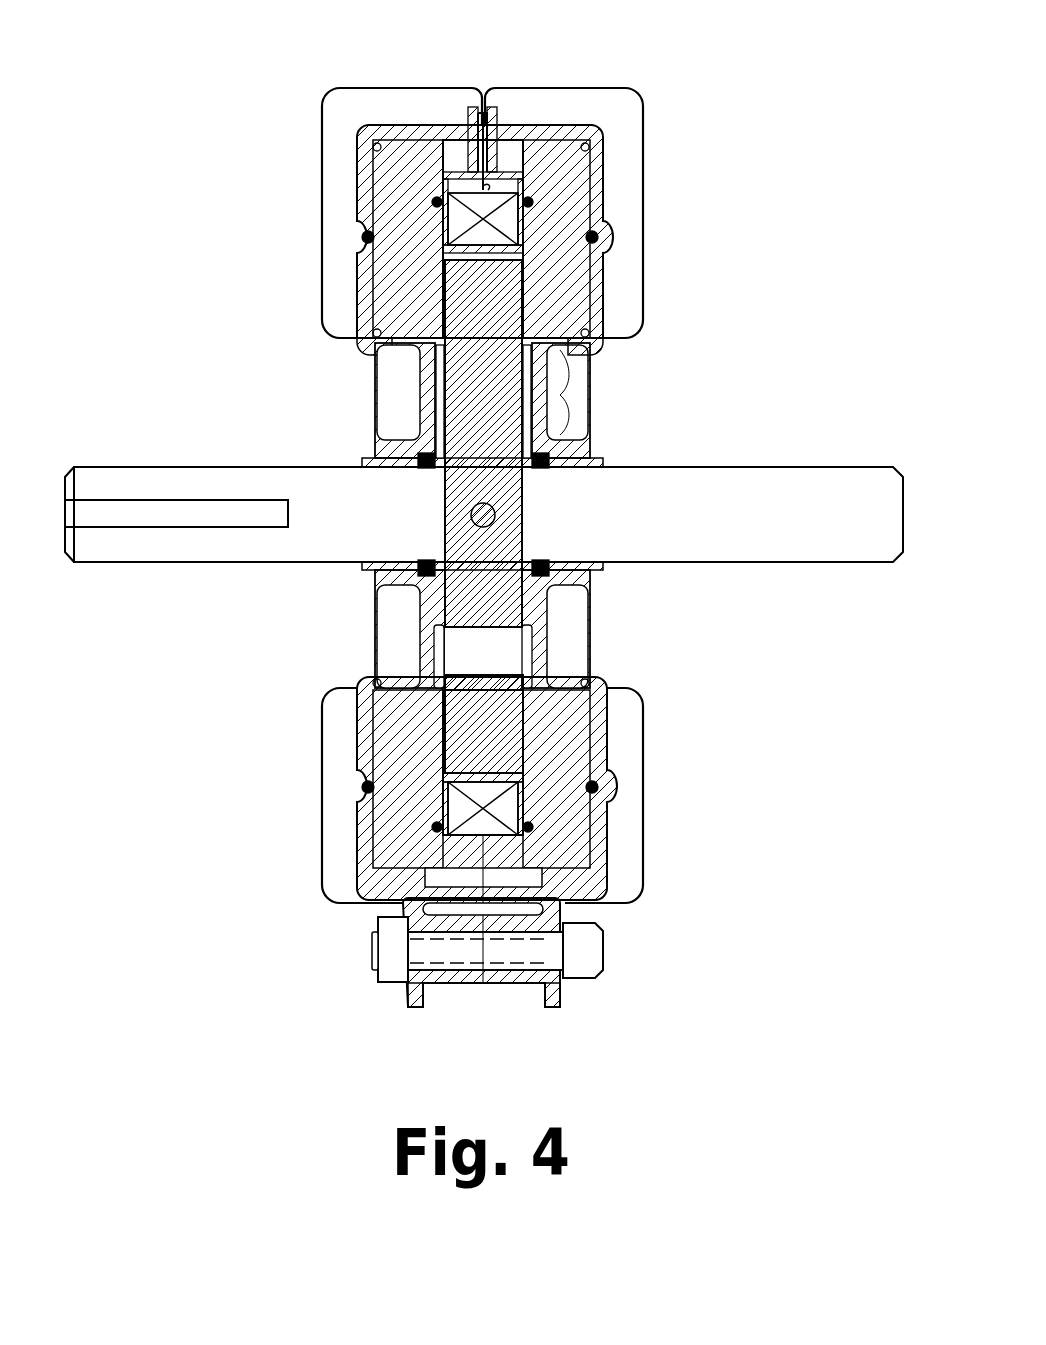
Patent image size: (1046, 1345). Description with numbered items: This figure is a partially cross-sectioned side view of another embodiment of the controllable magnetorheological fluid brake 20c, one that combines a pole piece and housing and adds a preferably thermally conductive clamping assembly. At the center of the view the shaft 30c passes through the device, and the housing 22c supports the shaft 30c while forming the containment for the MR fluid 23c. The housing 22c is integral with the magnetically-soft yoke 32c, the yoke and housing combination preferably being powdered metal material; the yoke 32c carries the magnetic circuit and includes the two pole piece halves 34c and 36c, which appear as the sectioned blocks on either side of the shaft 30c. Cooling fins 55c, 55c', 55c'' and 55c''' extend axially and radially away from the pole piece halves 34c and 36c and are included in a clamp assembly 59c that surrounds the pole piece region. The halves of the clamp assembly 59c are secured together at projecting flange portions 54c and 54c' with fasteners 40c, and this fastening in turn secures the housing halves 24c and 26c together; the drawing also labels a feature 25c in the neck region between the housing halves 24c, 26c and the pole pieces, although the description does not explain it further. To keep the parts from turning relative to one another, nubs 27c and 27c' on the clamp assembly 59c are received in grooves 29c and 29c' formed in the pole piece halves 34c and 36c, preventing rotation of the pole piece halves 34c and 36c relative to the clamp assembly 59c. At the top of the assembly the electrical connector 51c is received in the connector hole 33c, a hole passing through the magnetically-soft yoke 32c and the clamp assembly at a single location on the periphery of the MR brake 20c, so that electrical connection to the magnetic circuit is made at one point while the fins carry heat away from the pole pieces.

The magnetorheological fluid brake 20c is at (318, 241).
The housing 22c is at (362, 345).
The MR fluid 23c is at (530, 762).
The housing half 24c is at (375, 446).
The groove 25c is at (570, 383).
The housing half 26c is at (598, 446).
The nub 27c is at (586, 880).
The nub 27c' is at (415, 943).
The groove 29c is at (618, 784).
The groove 29c' is at (339, 784).
The shaft 30c is at (793, 528).
The magnetically-soft yoke 32c is at (598, 286).
The connector hole 33c is at (497, 130).
The pole piece half 34c is at (428, 300).
The pole piece half 36c is at (575, 300).
The fastener 40c is at (580, 960).
The electrical connector 51c is at (492, 110).
The projecting flange portion 54c is at (413, 1034).
The projecting flange portion 54c' is at (538, 1034).
The cooling fin 55c is at (668, 244).
The cooling fin 55c' is at (277, 244).
The cooling fin 55c'' is at (587, 106).
The cooling fin 55c''' is at (375, 99).
The clamp assembly 59c is at (352, 749).